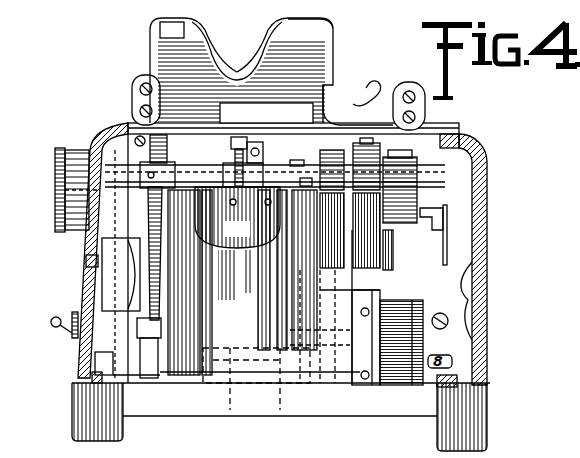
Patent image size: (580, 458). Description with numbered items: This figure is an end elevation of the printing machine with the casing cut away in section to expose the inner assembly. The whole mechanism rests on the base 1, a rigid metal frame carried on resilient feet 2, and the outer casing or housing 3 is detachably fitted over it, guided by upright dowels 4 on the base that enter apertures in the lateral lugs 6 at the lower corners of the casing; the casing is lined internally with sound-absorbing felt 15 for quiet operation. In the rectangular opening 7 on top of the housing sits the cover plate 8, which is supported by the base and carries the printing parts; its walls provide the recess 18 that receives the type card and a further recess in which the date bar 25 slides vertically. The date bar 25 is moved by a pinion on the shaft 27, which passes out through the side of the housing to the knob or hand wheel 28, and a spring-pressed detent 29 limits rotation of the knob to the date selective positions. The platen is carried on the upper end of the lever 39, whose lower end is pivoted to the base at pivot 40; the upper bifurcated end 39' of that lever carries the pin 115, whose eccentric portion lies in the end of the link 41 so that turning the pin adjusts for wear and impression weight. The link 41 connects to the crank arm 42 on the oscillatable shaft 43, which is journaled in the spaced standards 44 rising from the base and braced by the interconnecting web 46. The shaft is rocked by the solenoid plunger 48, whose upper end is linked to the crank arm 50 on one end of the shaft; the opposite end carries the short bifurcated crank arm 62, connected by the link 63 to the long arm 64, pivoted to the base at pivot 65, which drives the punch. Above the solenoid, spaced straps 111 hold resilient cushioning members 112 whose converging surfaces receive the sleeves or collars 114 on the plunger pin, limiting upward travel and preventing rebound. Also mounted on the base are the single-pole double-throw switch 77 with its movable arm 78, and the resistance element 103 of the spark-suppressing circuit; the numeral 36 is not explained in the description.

The base or frame 1 is at (373, 416).
The resilient feet or legs 2 is at (92, 428).
The outer casing or housing 3 is at (482, 241).
The upright pin or dowel 4 is at (87, 378).
The lateral flange or lug 6 is at (113, 386).
The rectangular opening 7 is at (133, 116).
The cover plate 8 is at (434, 133).
The lining of felt or sound-absorbing material 15 is at (100, 143).
The recess 18 is at (356, 97).
The date bar 25 is at (226, 55).
The shaft 27 is at (58, 174).
The knob or hand wheel 28 is at (58, 203).
The spring-pressed detent 29 is at (86, 262).
The cover flange 36 is at (306, 22).
The lever or arm 39 is at (237, 217).
The upper bifurcated end 39' is at (241, 145).
The pivot 40 is at (256, 381).
The link 41 is at (258, 142).
The crank arm 42 is at (222, 158).
The oscillatable shaft 43 is at (306, 178).
The standards 44 is at (163, 374).
The interconnecting web 46 is at (242, 282).
The plunger 48 is at (366, 247).
The crank arm 50 is at (366, 155).
The short bifurcated crank arm 62 is at (170, 163).
The link 63 is at (158, 161).
The long arm or lever 64 is at (142, 276).
The pivot 65 is at (119, 381).
The single-pole double-throw switch 77 is at (70, 336).
The movable arm 78 is at (51, 336).
The resistance element 103 is at (434, 249).
The straps 111 is at (395, 263).
The resilient cushioning members 112 is at (421, 218).
The sleeves or collars 114 is at (413, 190).
The pin 115 is at (295, 160).